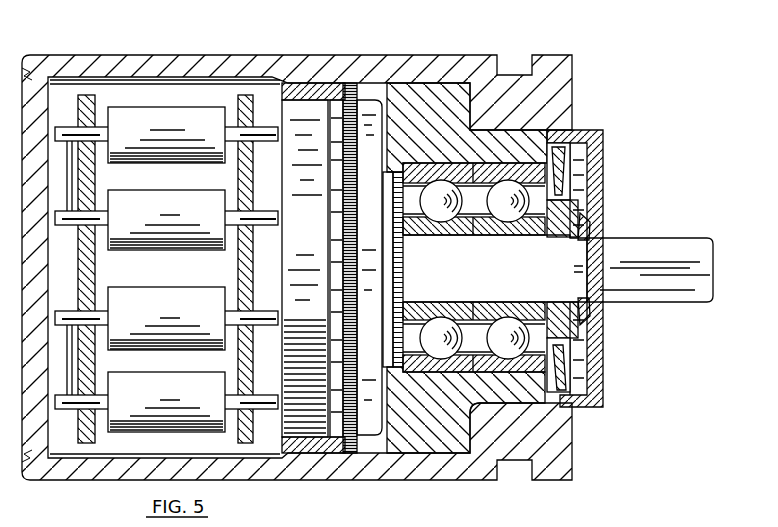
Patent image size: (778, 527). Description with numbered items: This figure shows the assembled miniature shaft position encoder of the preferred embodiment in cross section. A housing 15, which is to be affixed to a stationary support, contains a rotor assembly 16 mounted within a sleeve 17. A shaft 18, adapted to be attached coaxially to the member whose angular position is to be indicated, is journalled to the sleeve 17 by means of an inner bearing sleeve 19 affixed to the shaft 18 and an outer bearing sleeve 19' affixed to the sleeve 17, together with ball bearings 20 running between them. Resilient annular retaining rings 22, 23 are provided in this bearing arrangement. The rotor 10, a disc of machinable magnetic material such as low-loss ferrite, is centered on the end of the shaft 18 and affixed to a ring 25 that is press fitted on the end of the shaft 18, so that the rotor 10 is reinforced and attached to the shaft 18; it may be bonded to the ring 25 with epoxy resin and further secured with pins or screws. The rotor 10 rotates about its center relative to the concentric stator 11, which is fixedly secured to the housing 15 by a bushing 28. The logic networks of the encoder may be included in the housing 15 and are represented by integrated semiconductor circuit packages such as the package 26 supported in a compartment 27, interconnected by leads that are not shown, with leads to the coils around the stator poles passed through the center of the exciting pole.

The rotor 10 is at (373, 133).
The stator 11 is at (305, 268).
The housing 15 is at (462, 66).
The rotor assembly 16 is at (573, 116).
The sleeve 17 is at (467, 268).
The shaft 18 is at (623, 245).
The inner bearing sleeve 19 is at (474, 356).
The outer bearing sleeve 19' is at (483, 245).
The ball bearings 20 is at (508, 328).
The resilient annular retaining ring 22 is at (563, 194).
The resilient annular retaining ring 23 is at (584, 312).
The ring 25 is at (384, 250).
The integrated semiconductor circuit package 26 is at (141, 297).
The compartment 27 is at (165, 100).
The bushing 28 is at (334, 82).